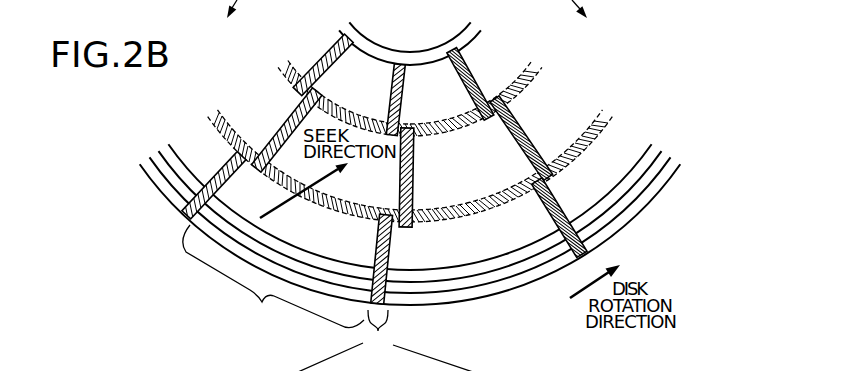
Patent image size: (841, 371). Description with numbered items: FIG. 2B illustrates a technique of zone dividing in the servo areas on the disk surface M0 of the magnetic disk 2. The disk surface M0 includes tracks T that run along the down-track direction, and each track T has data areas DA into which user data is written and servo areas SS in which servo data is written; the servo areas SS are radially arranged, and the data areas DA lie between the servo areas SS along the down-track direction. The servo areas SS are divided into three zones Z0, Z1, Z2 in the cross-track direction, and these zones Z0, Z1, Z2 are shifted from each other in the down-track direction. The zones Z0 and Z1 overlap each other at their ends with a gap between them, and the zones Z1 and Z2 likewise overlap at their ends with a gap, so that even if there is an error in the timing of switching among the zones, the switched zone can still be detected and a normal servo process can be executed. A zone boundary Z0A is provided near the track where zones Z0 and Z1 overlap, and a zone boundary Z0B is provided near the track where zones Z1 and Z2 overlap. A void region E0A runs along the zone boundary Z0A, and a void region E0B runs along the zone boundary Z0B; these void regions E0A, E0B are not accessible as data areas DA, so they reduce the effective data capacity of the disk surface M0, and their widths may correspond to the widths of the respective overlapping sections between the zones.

The zone Z0 is at (391, 258).
The zone Z1 is at (413, 156).
The zone Z2 is at (404, 102).
The zone boundary Z0A is at (213, 115).
The zone boundary Z0B is at (287, 63).
The void region E0A is at (597, 117).
The void region E0B is at (527, 63).
The track T is at (664, 162).
The magnetic disk 2 is at (640, 213).
The disk surface M0 is at (693, 225).
The data area DA is at (273, 276).
The servo area SS is at (385, 340).